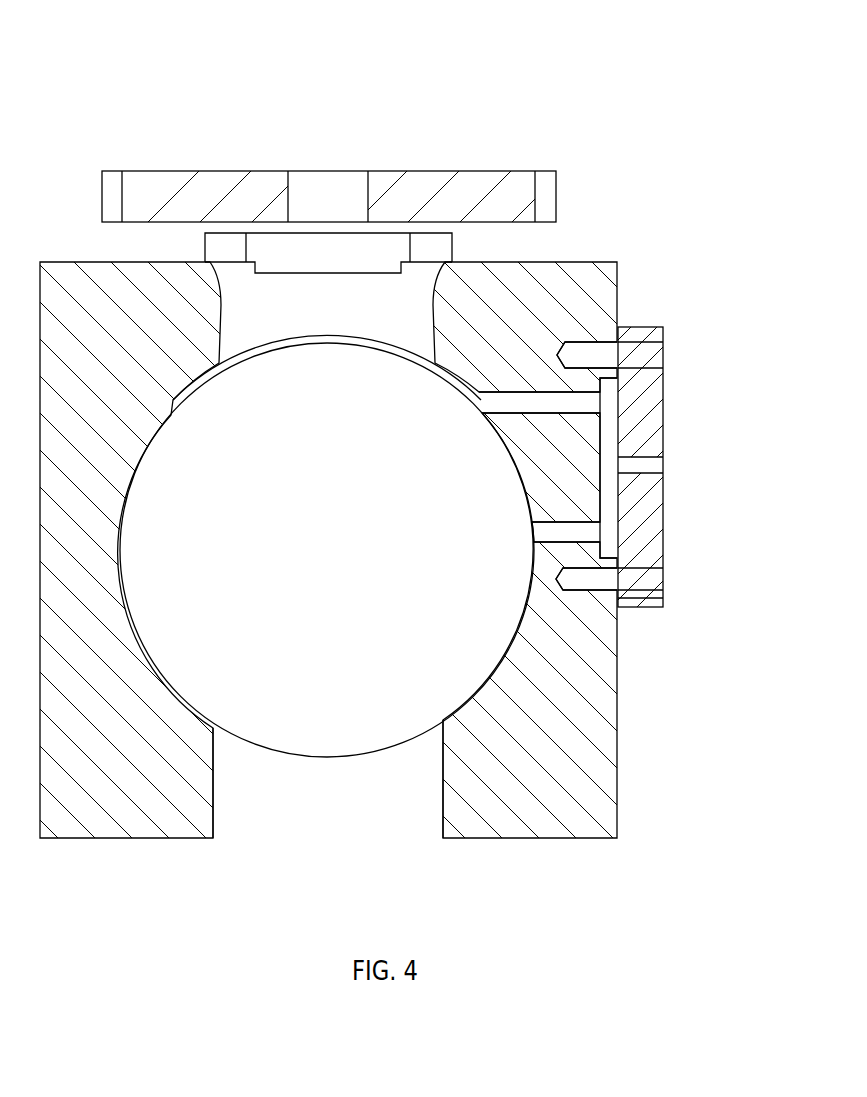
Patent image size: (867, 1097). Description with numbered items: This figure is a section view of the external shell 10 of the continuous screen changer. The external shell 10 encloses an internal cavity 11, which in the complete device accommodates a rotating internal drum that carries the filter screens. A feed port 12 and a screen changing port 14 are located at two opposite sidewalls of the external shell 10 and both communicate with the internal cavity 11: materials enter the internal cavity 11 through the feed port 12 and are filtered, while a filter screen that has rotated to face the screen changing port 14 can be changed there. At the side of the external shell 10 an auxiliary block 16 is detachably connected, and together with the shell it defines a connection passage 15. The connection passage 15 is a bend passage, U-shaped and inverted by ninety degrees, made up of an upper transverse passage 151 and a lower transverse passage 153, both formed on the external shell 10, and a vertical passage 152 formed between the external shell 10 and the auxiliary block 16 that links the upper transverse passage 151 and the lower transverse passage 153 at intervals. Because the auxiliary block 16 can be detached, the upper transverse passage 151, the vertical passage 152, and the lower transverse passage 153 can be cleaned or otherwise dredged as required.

The external shell 10 is at (94, 41).
The internal cavity 11 is at (262, 598).
The feed port 12 is at (318, 302).
The screen changing port 14 is at (333, 820).
The connection passage 15 is at (735, 261).
The upper transverse passage 151 is at (615, 354).
The vertical passage 152 is at (601, 407).
The lower transverse passage 153 is at (606, 443).
The auxiliary block 16 is at (637, 516).